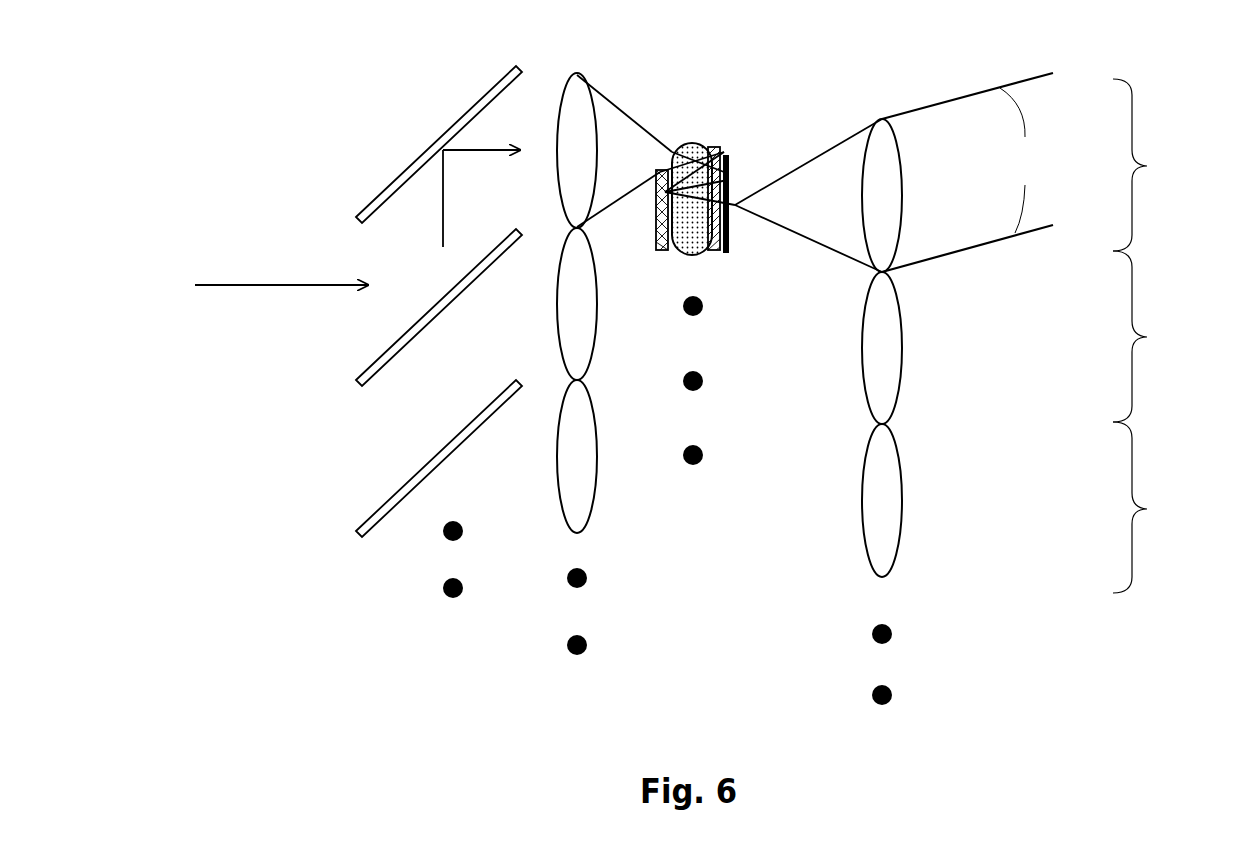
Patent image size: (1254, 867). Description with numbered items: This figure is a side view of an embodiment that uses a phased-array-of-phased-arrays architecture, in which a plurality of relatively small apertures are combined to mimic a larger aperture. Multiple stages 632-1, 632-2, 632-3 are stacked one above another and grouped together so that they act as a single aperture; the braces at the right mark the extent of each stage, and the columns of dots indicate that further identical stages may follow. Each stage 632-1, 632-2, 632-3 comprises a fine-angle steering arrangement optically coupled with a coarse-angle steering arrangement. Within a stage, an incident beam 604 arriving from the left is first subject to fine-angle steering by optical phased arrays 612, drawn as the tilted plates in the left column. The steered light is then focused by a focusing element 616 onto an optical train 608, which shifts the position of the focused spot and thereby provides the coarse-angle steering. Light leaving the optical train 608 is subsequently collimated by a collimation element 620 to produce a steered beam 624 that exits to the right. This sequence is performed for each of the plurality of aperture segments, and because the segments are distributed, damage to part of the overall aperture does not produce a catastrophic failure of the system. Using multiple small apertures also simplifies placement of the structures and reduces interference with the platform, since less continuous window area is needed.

The incident beam 604 is at (253, 285).
The optical phased arrays 612 is at (488, 86).
The focusing element 616 is at (579, 74).
The optical train 608 is at (699, 126).
The collimation element 620 is at (903, 172).
The steered beam 624 is at (967, 172).
The stage 632-1 is at (1160, 165).
The stage 632-2 is at (1164, 336).
The stage 632-3 is at (1164, 507).